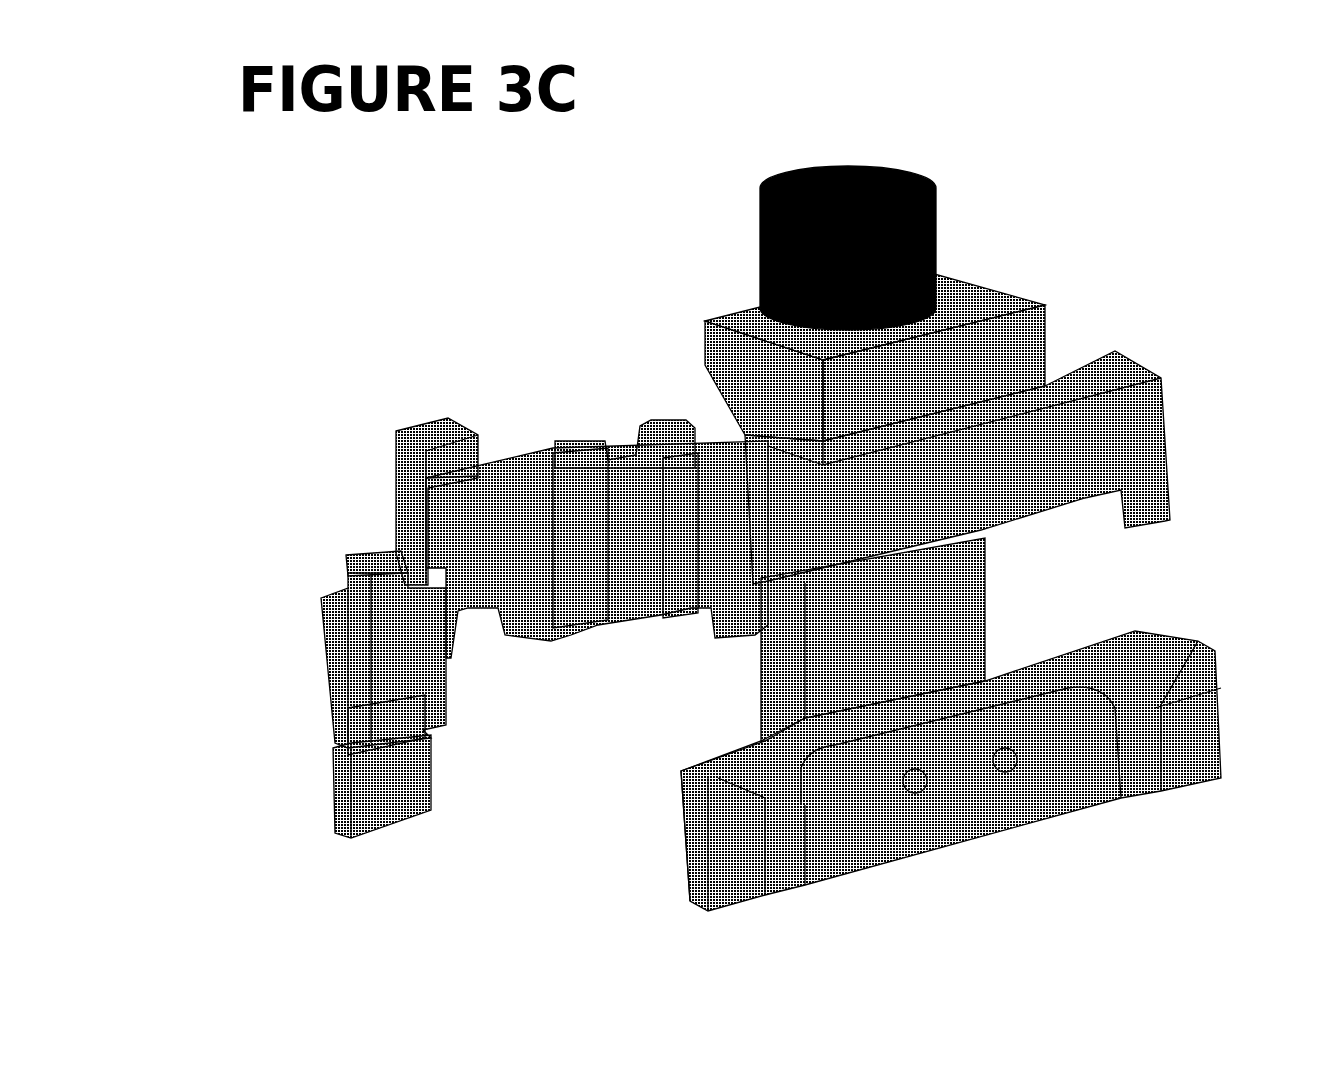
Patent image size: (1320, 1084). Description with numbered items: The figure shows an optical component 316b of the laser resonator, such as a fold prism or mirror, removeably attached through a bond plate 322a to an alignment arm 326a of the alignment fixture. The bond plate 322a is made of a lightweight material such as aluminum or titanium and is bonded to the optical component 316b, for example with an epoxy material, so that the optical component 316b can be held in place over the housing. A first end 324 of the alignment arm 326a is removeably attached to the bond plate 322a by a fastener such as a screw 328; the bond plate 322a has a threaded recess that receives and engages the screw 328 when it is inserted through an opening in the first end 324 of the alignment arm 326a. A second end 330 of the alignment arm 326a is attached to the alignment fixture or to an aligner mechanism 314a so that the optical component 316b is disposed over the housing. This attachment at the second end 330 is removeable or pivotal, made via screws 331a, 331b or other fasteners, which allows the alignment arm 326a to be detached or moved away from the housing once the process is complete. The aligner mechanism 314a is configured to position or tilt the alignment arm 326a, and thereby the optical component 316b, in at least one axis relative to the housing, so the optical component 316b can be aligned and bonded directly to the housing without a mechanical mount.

The aligner mechanism 314a is at (970, 269).
The alignment arm 326a is at (432, 400).
The second end of the alignment arm 330 is at (600, 425).
The screw 331a is at (569, 579).
The screw 331b is at (666, 529).
The screw 328 is at (362, 562).
The first end of the alignment arm 324 is at (286, 605).
The bond plate 322a is at (309, 728).
The optical component 316b is at (312, 810).